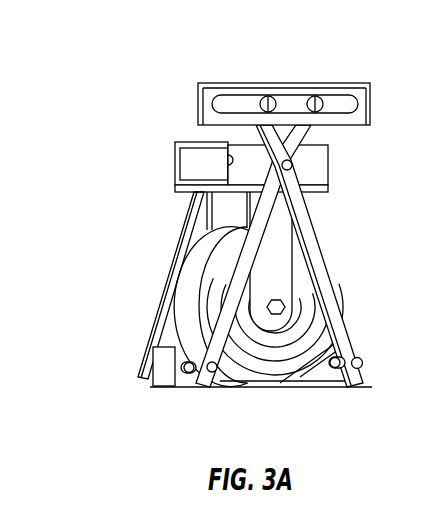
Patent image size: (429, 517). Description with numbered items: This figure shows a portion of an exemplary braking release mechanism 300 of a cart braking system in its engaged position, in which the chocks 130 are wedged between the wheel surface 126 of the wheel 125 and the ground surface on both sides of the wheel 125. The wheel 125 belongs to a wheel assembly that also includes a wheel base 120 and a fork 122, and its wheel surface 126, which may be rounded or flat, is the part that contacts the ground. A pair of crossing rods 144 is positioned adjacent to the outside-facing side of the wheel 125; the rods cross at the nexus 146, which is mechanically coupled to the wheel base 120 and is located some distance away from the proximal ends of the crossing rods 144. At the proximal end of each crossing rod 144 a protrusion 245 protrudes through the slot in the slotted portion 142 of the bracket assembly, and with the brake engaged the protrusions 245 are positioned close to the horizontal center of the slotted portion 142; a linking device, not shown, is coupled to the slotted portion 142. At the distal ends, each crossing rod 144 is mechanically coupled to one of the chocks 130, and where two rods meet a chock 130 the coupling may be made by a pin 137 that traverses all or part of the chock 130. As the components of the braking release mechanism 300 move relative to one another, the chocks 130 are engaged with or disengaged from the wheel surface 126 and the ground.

The braking release mechanism 300 is at (134, 71).
The slotted portion 142 is at (370, 92).
The protrusion 245 is at (314, 96).
The wheel base 120 is at (181, 162).
The wheel surface 126 is at (185, 276).
The fork 122 is at (286, 241).
The crossing rods 144 is at (337, 284).
The nexus 146 is at (293, 166).
The wheel 125 is at (255, 395).
The pin 137 is at (190, 373).
The chocks 130 is at (228, 388).